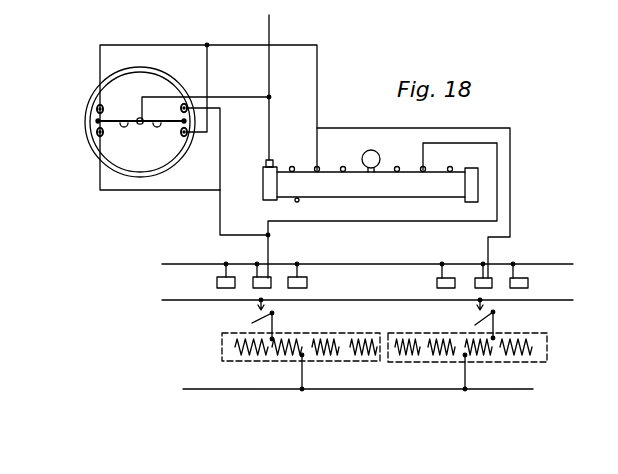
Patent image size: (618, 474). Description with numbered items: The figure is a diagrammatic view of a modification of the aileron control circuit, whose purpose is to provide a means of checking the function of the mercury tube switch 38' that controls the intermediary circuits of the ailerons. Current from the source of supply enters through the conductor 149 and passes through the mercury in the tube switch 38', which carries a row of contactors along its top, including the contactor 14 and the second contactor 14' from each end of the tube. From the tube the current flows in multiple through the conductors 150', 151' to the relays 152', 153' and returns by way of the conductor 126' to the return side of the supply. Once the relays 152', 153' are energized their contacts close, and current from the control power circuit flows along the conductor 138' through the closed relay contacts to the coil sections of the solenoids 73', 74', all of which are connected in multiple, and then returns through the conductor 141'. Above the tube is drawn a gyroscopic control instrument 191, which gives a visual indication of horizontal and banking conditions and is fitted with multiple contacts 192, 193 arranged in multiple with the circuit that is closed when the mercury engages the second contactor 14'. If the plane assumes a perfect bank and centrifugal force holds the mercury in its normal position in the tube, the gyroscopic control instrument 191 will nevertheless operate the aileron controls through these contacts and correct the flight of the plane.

The conductor 149 is at (270, 28).
The gyroscopic control instrument 191 is at (118, 79).
The contacts 192 is at (97, 108).
The contacts 193 is at (97, 133).
The conductor 150' is at (413, 193).
The conductor 151' is at (382, 210).
The tube switch 38' is at (370, 182).
The contactor 14 is at (304, 181).
The second contactor 14' is at (420, 181).
The conductor 126' is at (367, 254).
The conductor 138' is at (367, 294).
The relay 152' is at (292, 265).
The relay 153' is at (467, 267).
The solenoid 73' is at (283, 347).
The solenoid 74' is at (503, 348).
The conductor 141' is at (358, 399).